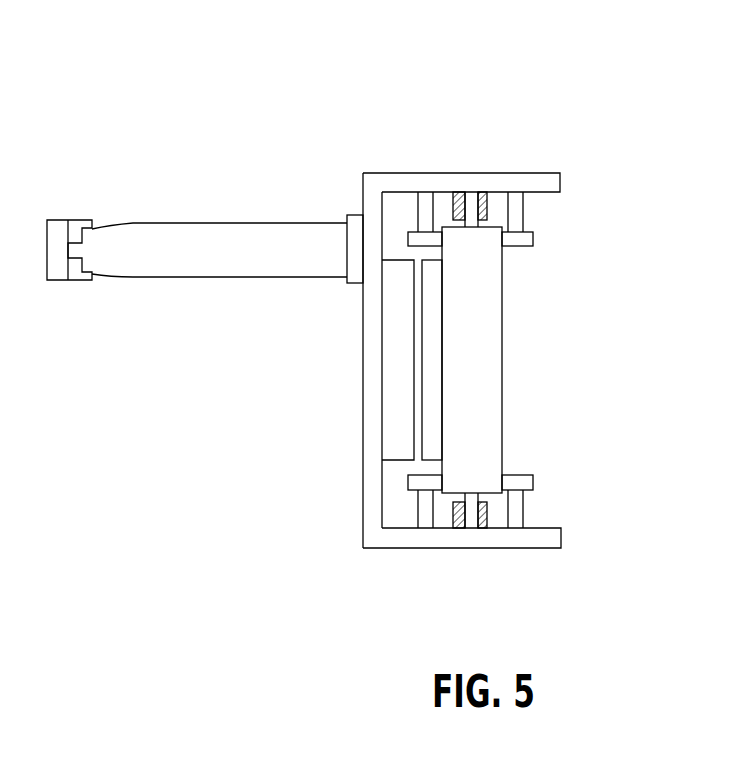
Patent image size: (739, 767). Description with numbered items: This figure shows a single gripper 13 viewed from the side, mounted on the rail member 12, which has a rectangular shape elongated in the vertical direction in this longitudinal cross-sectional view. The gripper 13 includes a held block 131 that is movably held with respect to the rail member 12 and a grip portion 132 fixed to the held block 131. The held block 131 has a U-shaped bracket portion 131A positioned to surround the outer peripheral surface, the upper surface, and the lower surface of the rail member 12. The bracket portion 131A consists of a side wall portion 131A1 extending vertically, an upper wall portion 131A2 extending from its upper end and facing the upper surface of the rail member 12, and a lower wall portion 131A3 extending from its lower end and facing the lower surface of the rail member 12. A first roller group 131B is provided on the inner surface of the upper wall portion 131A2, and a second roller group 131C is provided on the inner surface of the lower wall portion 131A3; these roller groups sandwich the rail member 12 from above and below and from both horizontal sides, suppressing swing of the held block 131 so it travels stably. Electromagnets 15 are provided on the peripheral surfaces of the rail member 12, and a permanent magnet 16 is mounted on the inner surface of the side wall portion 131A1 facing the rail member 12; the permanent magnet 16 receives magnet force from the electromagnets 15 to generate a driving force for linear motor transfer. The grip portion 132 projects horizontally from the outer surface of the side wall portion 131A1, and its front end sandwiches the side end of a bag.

The rail member 12 is at (502, 368).
The gripper 13 is at (395, 80).
The electromagnet 15 is at (433, 322).
The permanent magnet 16 is at (398, 450).
The held block 131 is at (398, 173).
The bracket portion 131A is at (363, 488).
The side wall portion 131A1 is at (363, 407).
The upper wall portion 131A2 is at (502, 182).
The lower wall portion 131A3 is at (480, 537).
The first roller group 131B is at (540, 212).
The second roller group 131C is at (537, 505).
The grip portion 132 is at (295, 222).